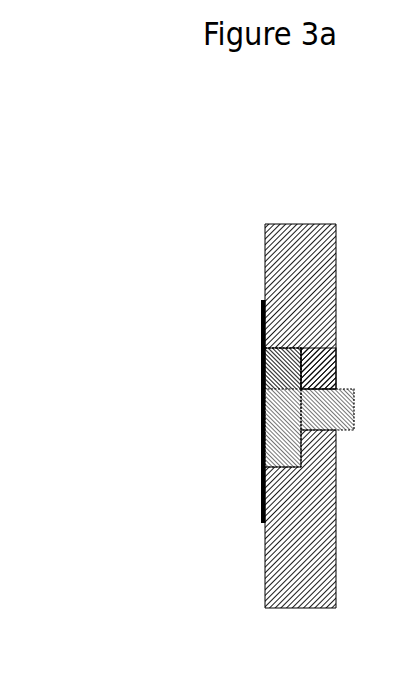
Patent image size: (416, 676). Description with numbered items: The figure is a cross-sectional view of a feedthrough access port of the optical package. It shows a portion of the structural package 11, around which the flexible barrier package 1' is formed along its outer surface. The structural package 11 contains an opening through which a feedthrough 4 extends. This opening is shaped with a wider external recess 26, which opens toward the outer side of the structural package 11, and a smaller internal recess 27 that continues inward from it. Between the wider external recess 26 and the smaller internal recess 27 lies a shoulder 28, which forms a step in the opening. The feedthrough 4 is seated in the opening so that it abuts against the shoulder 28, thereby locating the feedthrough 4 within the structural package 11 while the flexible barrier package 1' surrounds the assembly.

The structural package 11 is at (272, 242).
The shoulder 28 is at (338, 364).
The feedthrough 4 is at (270, 410).
The external recess 26 is at (278, 358).
The internal recess 27 is at (322, 418).
The flexible barrier package 1' is at (159, 439).